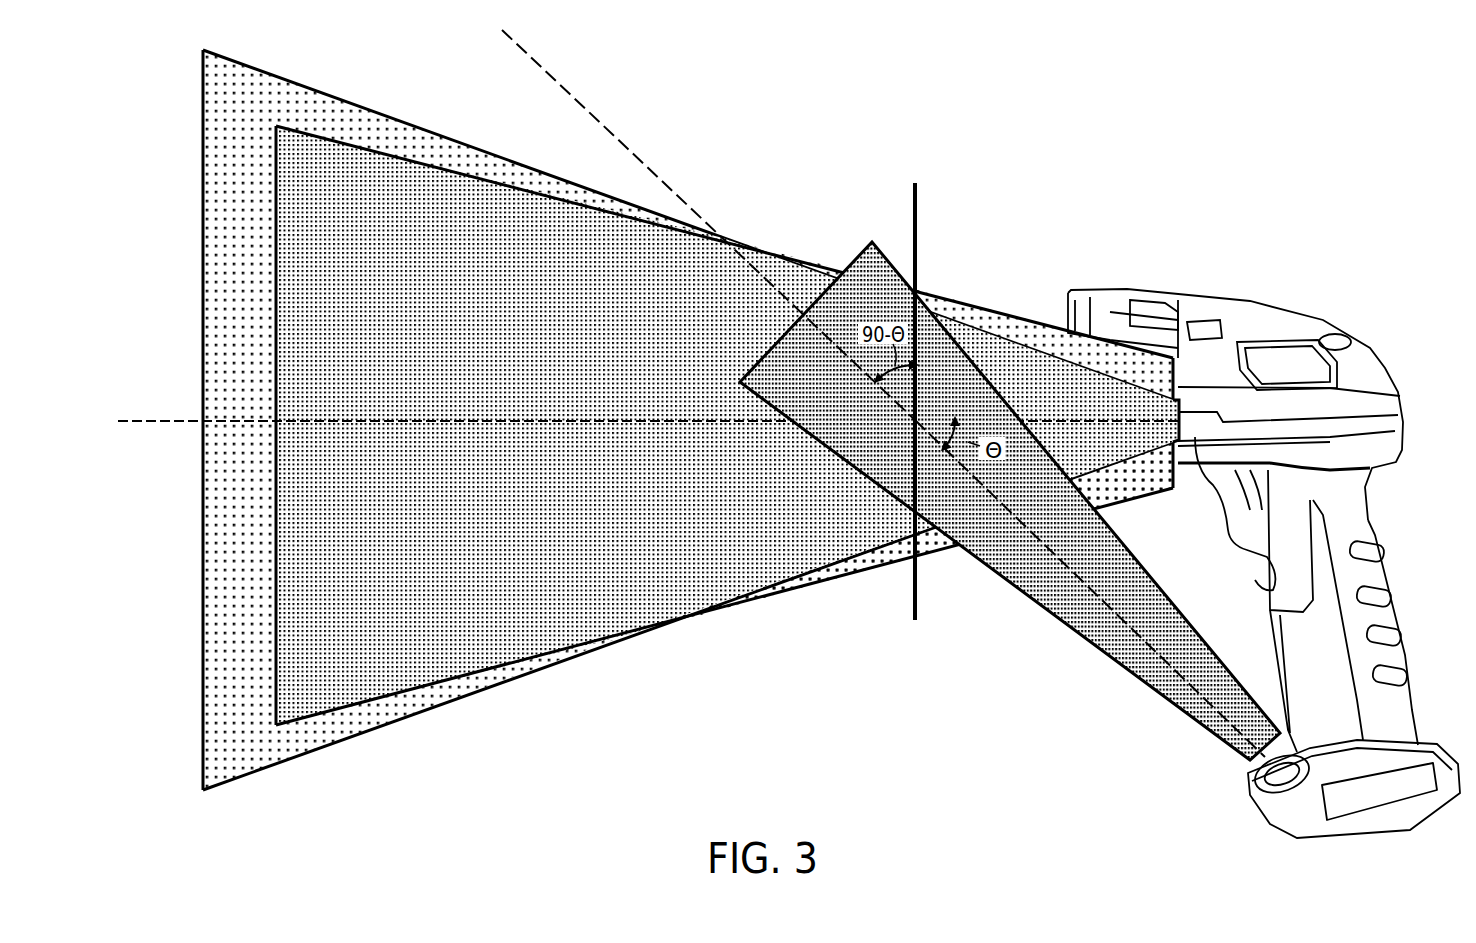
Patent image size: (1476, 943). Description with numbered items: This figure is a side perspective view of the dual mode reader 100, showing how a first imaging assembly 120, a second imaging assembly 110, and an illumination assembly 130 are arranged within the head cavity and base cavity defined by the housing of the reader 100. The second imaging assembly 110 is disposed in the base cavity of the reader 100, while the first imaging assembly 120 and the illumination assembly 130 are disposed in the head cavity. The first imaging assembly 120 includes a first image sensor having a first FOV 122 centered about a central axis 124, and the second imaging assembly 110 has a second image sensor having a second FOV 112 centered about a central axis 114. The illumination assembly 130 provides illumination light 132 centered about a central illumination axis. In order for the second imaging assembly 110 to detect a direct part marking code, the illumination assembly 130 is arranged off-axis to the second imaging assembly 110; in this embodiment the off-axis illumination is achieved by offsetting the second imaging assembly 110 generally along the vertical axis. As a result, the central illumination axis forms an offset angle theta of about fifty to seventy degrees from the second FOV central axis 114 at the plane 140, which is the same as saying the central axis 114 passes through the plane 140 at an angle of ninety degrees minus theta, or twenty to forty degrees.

The reader 100 is at (1358, 337).
The second imaging assembly 110 is at (1291, 832).
The second FOV 112 is at (1186, 714).
The central axis 114 is at (578, 98).
The first imaging assembly 120 is at (1178, 434).
The first FOV 122 is at (1150, 492).
The central axis 124 is at (119, 424).
The illumination assembly 130 is at (1163, 314).
The illumination light 132 is at (1015, 327).
The plane 140 is at (912, 203).